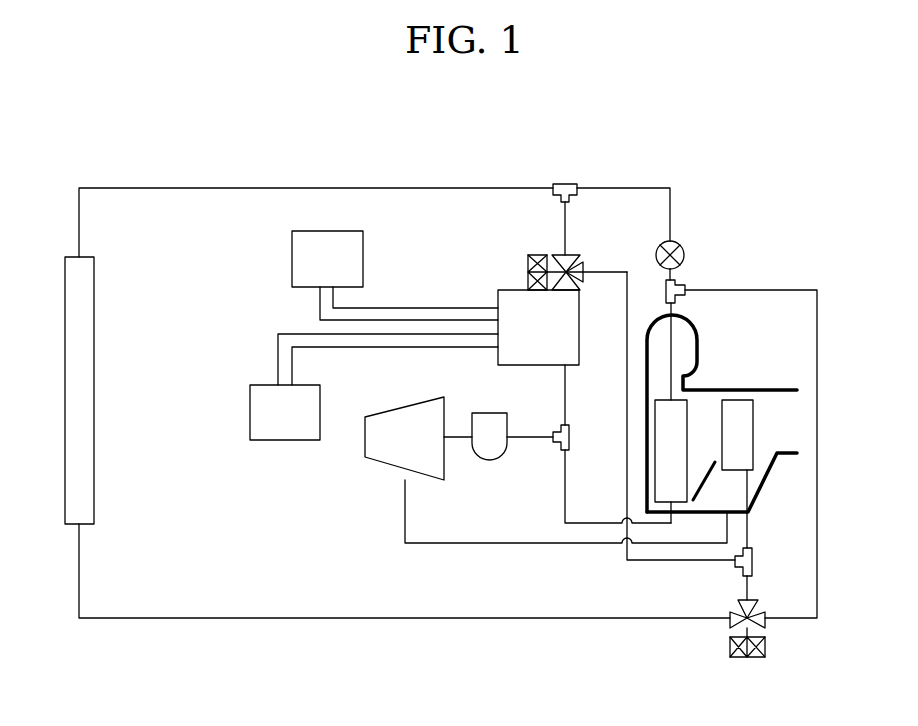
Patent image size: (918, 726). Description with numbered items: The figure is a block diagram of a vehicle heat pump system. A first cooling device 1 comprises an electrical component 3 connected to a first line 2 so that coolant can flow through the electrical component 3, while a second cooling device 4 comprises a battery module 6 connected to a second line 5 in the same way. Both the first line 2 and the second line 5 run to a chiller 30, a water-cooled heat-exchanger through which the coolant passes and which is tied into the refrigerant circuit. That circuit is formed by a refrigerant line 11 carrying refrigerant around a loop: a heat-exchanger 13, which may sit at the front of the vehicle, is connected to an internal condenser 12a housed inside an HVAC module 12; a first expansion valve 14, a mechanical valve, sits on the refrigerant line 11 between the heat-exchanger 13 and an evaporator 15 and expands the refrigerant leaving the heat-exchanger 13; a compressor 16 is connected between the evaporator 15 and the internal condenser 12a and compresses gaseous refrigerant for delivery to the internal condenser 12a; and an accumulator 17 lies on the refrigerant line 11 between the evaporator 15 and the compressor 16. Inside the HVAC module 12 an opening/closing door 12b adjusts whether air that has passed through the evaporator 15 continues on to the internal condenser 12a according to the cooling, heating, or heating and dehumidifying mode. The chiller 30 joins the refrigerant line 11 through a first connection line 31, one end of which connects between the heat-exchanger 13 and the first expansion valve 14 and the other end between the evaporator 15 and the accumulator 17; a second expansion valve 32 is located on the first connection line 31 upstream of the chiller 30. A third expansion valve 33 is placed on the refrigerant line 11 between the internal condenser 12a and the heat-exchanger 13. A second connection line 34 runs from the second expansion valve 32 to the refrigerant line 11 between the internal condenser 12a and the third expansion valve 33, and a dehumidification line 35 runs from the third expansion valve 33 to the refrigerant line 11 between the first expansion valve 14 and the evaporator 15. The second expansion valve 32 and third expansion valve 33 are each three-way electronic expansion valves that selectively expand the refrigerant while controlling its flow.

The first cooling device 1 is at (374, 264).
The first line 2 is at (420, 308).
The electrical component 3 is at (292, 258).
The second cooling device 4 is at (276, 352).
The second line 5 is at (352, 347).
The battery module 6 is at (250, 412).
The refrigerant line 11 is at (409, 188).
The HVAC module 12 is at (728, 426).
The internal condenser 12a is at (753, 423).
The opening/closing door 12b is at (700, 480).
The heat-exchanger 13 is at (95, 388).
The first expansion valve 14 is at (685, 254).
The evaporator 15 is at (690, 412).
The compressor 16 is at (385, 462).
The accumulator 17 is at (488, 413).
The chiller 30 is at (498, 362).
The first connection line 31 is at (566, 229).
The second expansion valve 32 is at (528, 264).
The third expansion valve 33 is at (747, 659).
The second connection line 34 is at (627, 312).
The dehumidification line 35 is at (817, 339).